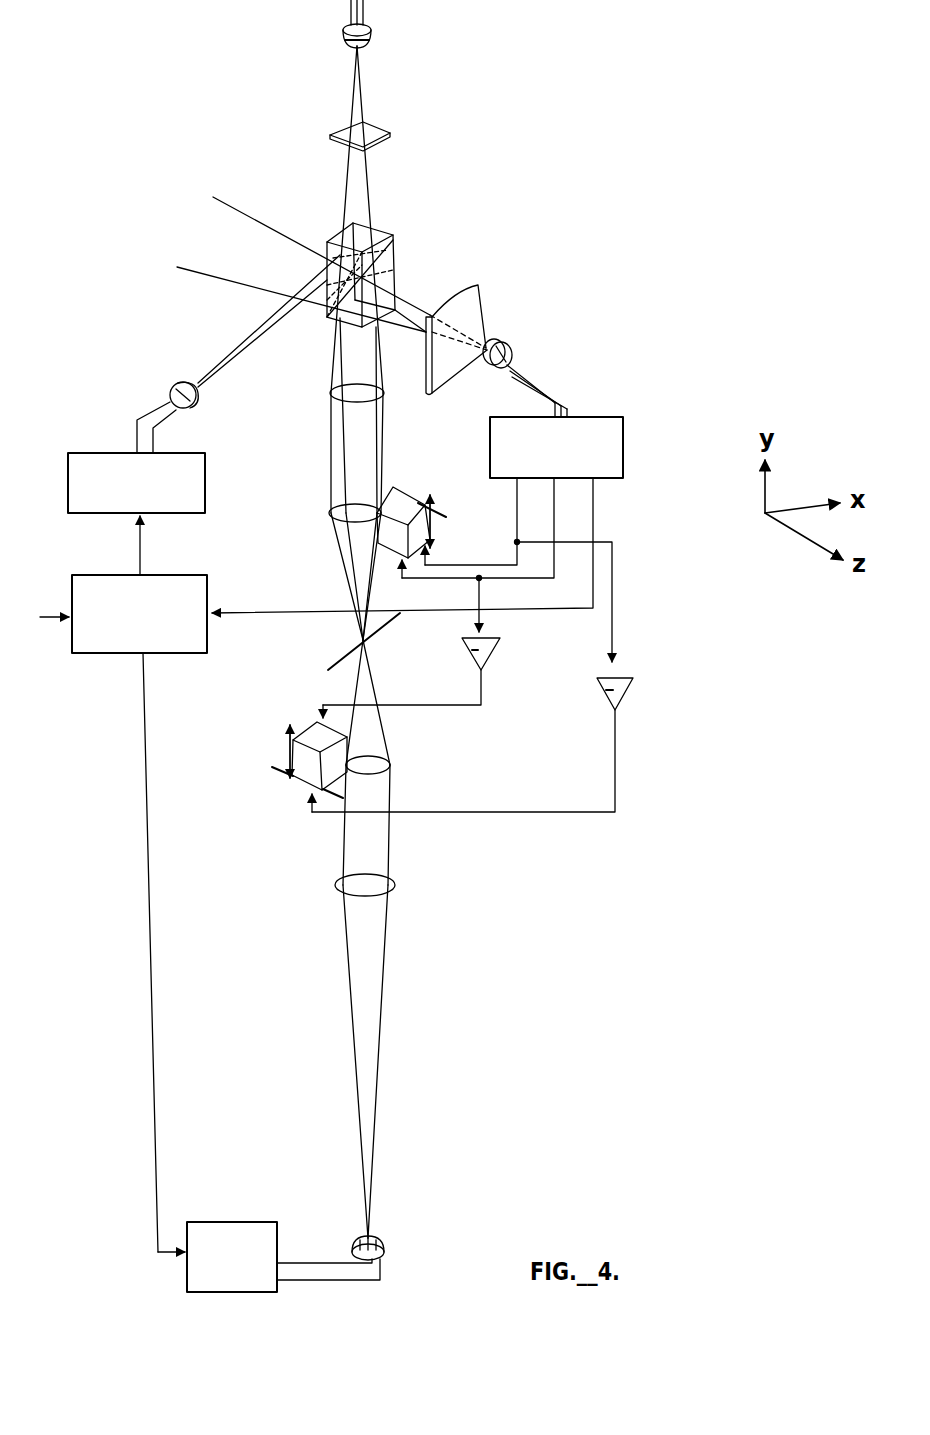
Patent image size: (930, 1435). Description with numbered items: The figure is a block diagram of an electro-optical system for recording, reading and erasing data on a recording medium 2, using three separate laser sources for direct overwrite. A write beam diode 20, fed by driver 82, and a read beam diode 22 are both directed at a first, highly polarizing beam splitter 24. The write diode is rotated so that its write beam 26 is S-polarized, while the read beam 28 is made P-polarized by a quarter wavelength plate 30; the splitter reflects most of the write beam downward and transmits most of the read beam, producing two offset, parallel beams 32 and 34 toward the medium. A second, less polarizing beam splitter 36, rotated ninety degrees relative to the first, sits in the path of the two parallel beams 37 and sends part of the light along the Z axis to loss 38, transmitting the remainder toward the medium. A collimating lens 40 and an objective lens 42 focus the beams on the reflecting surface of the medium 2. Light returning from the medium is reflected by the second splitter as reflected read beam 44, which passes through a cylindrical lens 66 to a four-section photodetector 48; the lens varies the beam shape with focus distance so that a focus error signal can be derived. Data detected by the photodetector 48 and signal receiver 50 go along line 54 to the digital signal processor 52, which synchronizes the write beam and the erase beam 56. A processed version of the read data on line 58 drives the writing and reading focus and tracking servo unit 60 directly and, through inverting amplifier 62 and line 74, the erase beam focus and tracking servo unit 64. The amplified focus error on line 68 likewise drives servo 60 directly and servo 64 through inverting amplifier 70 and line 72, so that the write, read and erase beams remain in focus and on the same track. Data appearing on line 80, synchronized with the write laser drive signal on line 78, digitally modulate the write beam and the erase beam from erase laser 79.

The recording medium 2 is at (350, 652).
The write beam diode 20 is at (168, 384).
The read beam diode 22 is at (372, 38).
The first beam splitter 24 is at (393, 238).
The write beam 26 is at (245, 362).
The read beam 28 is at (362, 90).
The quarter wavelength plate 30 is at (380, 140).
The write beam 32 is at (345, 580).
The read beam 34 is at (378, 590).
The second beam splitter 36 is at (398, 287).
The parallel beams 37 is at (320, 320).
The loss 38 is at (287, 240).
The collimating lens 40 is at (380, 396).
The objective lens 42 is at (356, 510).
The reflected read beam 44 is at (388, 343).
The photodetector 48 is at (514, 354).
The signal receiver 50 is at (597, 417).
The digital signal processor 52 is at (195, 575).
The line 54 is at (593, 505).
The erase beam 56 is at (372, 685).
The line 58 is at (554, 505).
The writing and reading focus and tracking servo unit 60 is at (405, 500).
The inverting amplifier 62 is at (485, 670).
The erase beam focus and tracking servo unit 64 is at (305, 735).
The cylindrical lens 66 is at (470, 285).
The line 68 is at (517, 505).
The inverting amplifier 70 is at (618, 705).
The line 72 is at (616, 812).
The line 74 is at (450, 707).
The line 78 is at (141, 572).
The erase laser 79 is at (385, 1253).
The line 80 is at (42, 617).
The driver 82 is at (195, 453).